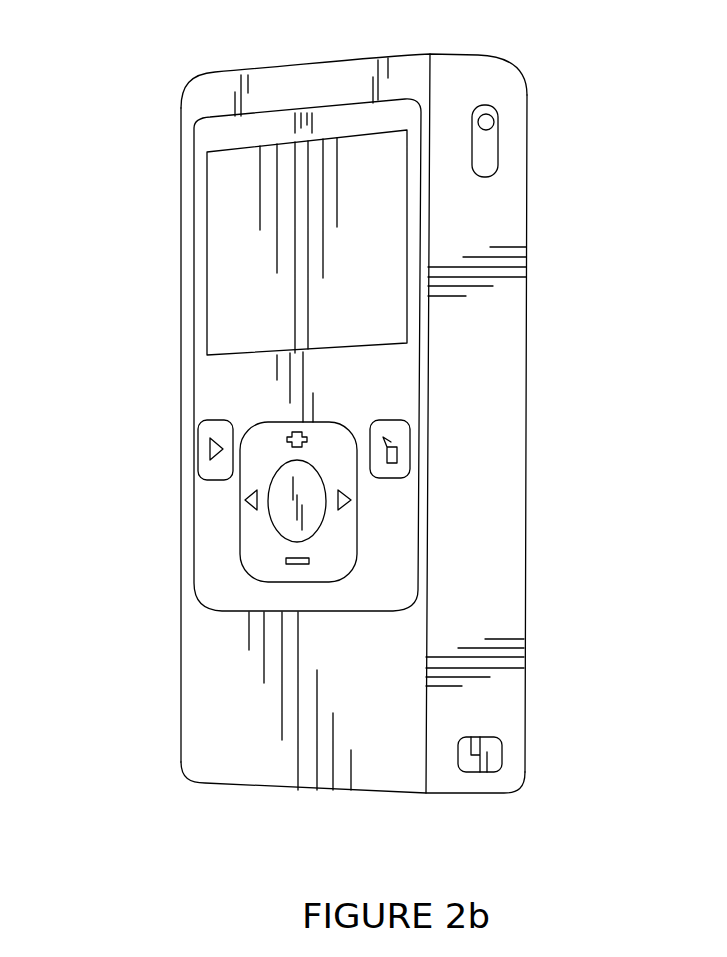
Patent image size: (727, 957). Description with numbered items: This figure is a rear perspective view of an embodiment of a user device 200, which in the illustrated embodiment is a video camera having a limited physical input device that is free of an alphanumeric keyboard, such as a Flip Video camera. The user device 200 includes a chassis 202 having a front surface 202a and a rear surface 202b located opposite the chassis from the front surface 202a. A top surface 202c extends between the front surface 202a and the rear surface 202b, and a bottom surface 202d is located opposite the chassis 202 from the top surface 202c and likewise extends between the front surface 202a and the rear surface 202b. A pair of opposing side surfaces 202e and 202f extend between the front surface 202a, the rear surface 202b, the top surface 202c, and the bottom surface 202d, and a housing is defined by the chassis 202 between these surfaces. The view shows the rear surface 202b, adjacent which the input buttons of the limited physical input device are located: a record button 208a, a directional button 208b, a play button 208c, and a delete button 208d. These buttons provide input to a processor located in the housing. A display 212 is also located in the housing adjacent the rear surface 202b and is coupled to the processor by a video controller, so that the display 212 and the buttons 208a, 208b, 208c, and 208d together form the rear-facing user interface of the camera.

The user device 200 is at (106, 164).
The chassis 202 is at (188, 100).
The front surface 202a is at (527, 297).
The rear surface 202b is at (200, 663).
The top surface 202c is at (305, 62).
The bottom surface 202d is at (323, 790).
The side surface 202e is at (180, 393).
The side surface 202f is at (507, 403).
The display 212 is at (240, 233).
The record button 208a is at (280, 515).
The directional button 208b is at (252, 553).
The play button 208c is at (213, 468).
The delete button 208d is at (397, 478).